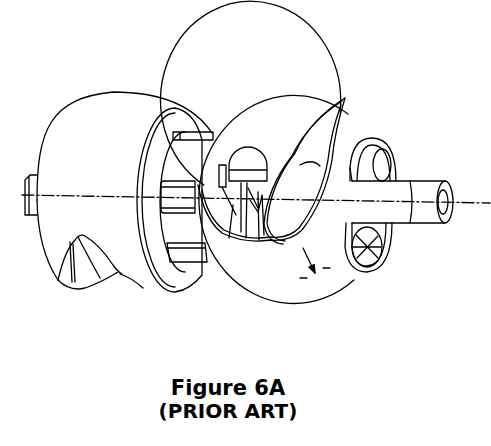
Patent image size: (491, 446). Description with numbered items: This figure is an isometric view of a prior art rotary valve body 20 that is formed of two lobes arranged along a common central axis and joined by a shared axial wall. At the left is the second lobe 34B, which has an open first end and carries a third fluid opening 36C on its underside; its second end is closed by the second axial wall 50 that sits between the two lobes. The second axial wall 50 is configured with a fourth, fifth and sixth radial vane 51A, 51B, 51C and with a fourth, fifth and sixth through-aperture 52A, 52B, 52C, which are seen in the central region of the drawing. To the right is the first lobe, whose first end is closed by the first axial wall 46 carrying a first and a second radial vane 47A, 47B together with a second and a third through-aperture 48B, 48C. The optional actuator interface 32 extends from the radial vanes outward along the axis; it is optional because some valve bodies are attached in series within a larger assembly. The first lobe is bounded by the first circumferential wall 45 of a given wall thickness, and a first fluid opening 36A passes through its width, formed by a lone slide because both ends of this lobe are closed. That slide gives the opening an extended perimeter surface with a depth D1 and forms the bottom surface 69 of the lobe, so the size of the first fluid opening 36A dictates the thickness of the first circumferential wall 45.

The rotary valve body 20 is at (385, 65).
The actuator interface 32 is at (425, 192).
The second lobe 34B is at (105, 98).
The first fluid opening 36A is at (307, 98).
The third fluid opening 36C is at (58, 282).
The first circumferential wall 45 is at (327, 298).
The first axial wall 46 is at (370, 158).
The first radial vane 47A is at (368, 152).
The second radial vane 47B is at (380, 230).
The second through-aperture 48B is at (383, 167).
The third through-aperture 48C is at (354, 248).
The second axial wall 50 is at (240, 196).
The fourth radial vane 51A is at (242, 168).
The fifth radial vane 51B is at (255, 192).
The sixth radial vane 51C is at (248, 205).
The fourth through-aperture 52A is at (246, 152).
The fifth through-aperture 52B is at (248, 225).
The sixth through-aperture 52C is at (232, 180).
The bottom surface 69 is at (308, 170).
The depth D1 is at (267, 104).